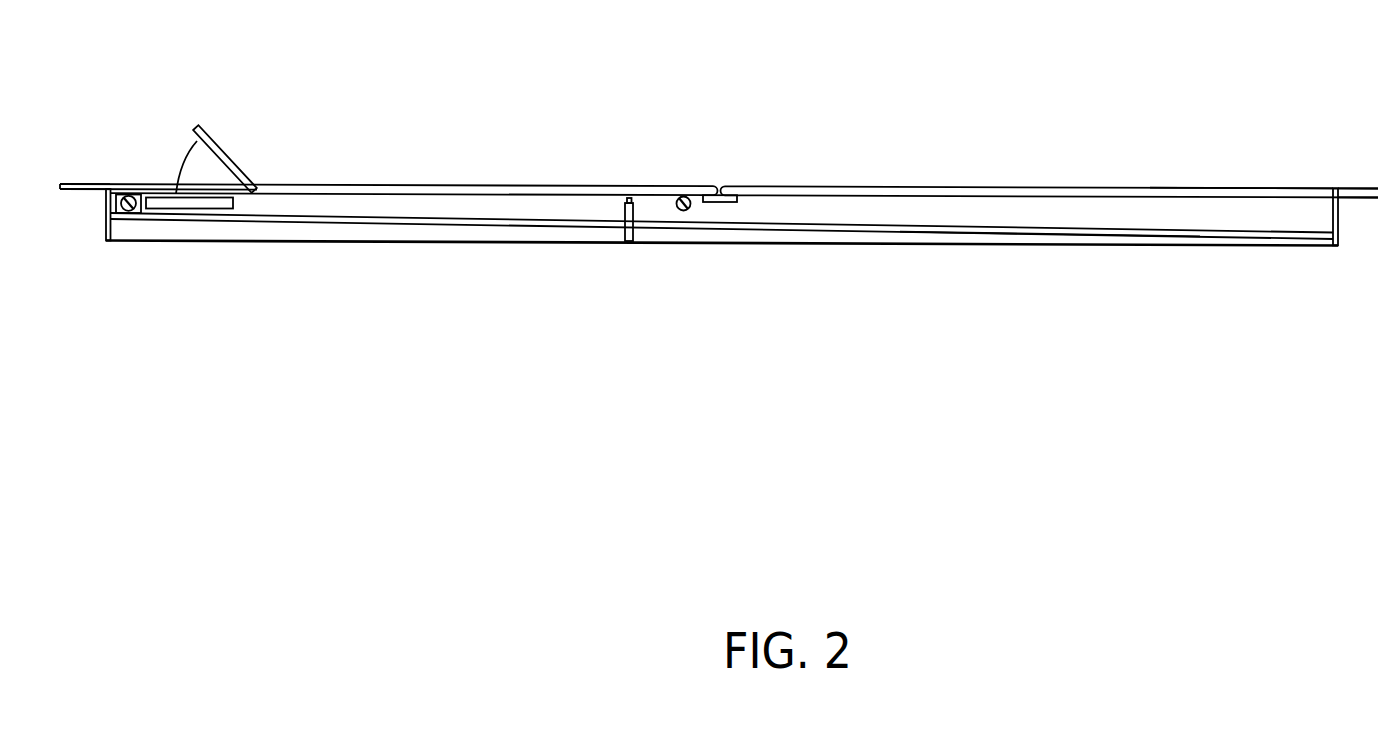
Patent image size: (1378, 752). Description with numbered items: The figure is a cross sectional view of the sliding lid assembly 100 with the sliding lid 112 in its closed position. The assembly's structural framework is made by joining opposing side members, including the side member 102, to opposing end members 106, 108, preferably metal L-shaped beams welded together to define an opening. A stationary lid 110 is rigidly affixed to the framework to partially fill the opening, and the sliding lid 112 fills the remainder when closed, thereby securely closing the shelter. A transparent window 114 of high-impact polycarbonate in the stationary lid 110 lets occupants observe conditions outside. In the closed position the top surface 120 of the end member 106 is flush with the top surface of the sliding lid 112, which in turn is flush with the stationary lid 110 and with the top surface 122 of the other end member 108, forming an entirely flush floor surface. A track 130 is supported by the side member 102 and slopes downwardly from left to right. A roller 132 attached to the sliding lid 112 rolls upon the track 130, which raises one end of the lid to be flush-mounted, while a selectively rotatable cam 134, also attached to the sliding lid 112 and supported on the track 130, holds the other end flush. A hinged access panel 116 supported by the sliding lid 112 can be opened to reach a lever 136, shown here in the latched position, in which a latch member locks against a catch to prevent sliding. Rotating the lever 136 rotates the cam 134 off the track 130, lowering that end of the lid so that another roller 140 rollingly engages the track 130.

The sliding lid assembly 100 is at (962, 46).
The side member 102 is at (760, 230).
The end member 106 is at (106, 224).
The end member 108 is at (1338, 244).
The stationary lid 110 is at (852, 187).
The sliding lid 112 is at (512, 186).
The transparent window 114 is at (1243, 188).
The hinged access panel 116 is at (228, 155).
The top surface 120 is at (110, 189).
The top surface 122 is at (1363, 188).
The track 130 is at (1065, 236).
The roller 132 is at (128, 211).
The selectively rotatable cam 134 is at (636, 205).
The lever 136 is at (213, 208).
The roller 140 is at (686, 210).